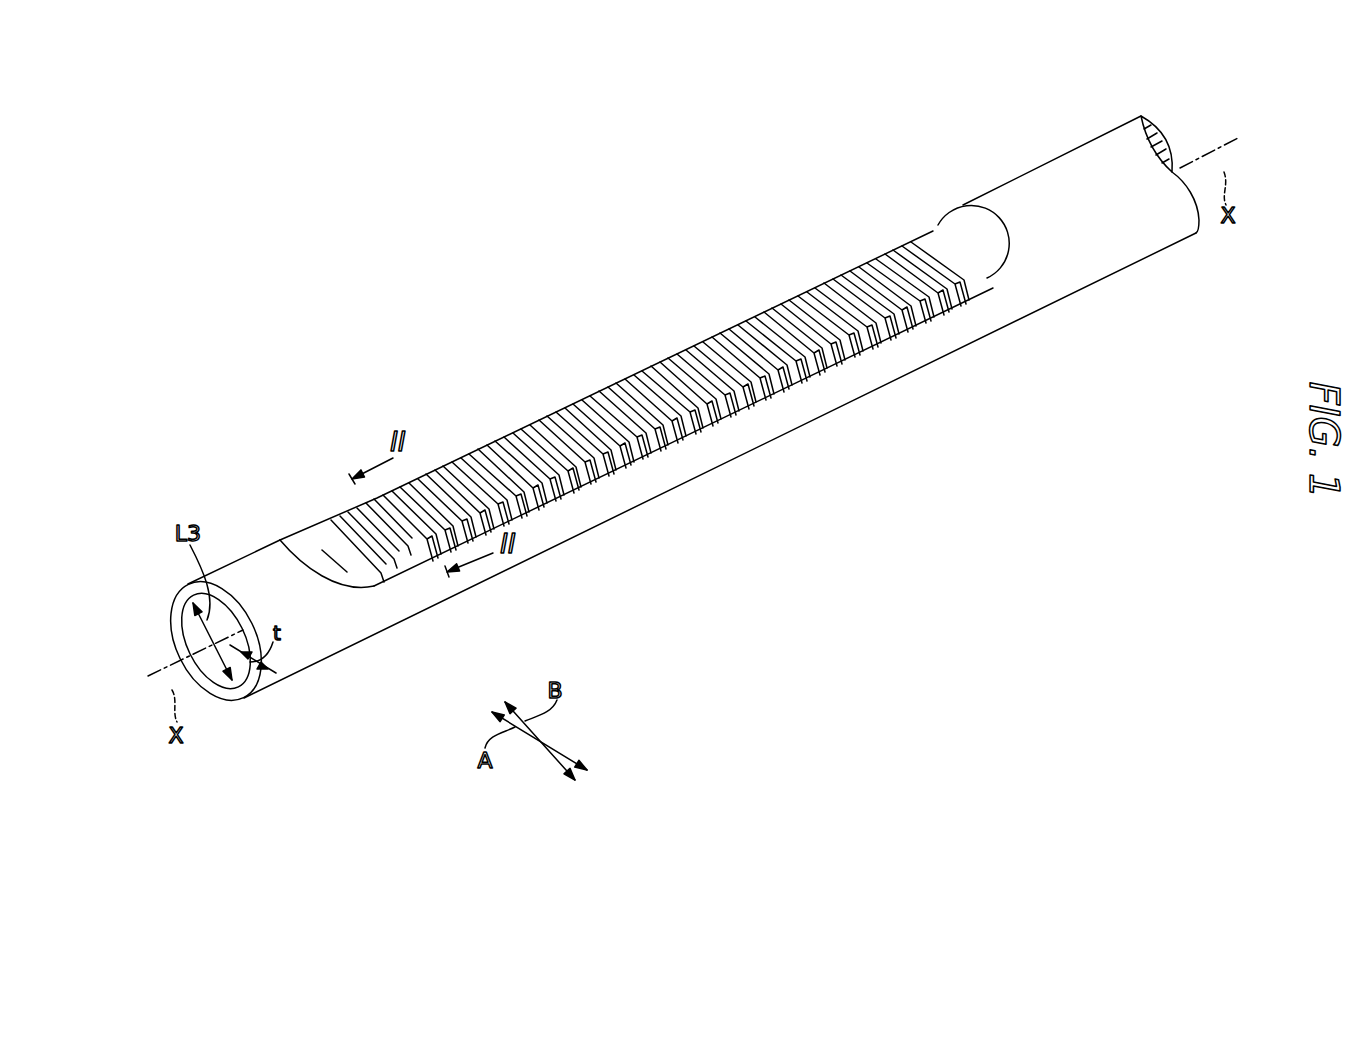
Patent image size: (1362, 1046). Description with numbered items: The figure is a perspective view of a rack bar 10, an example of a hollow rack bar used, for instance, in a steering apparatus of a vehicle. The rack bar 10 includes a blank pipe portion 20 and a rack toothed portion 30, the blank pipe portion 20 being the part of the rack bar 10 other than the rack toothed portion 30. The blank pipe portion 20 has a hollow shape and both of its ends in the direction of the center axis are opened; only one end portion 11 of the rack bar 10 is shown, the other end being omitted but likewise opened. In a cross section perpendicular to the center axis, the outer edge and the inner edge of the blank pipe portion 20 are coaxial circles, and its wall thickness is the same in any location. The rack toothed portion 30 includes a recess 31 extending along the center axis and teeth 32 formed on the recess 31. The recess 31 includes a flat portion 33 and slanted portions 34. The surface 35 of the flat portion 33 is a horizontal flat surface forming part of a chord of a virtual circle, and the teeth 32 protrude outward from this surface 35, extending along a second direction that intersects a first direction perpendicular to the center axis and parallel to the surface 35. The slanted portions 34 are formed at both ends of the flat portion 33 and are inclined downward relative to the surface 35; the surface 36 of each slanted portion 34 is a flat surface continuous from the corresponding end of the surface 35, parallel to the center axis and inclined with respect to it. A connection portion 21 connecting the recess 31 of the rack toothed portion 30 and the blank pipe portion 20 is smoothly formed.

The rack bar 10 is at (799, 272).
The one end portion 11 is at (568, 392).
The blank pipe portion 20 is at (1060, 172).
The connection portion 21 is at (980, 217).
The rack toothed portion 30 is at (826, 432).
The recess 31 is at (999, 287).
The teeth 32 is at (885, 247).
The flat portion 33 is at (712, 368).
The slanted portions 34 is at (432, 553).
The surface of the flat portion 35 is at (933, 250).
The surface of the slanted portion 36 is at (563, 487).